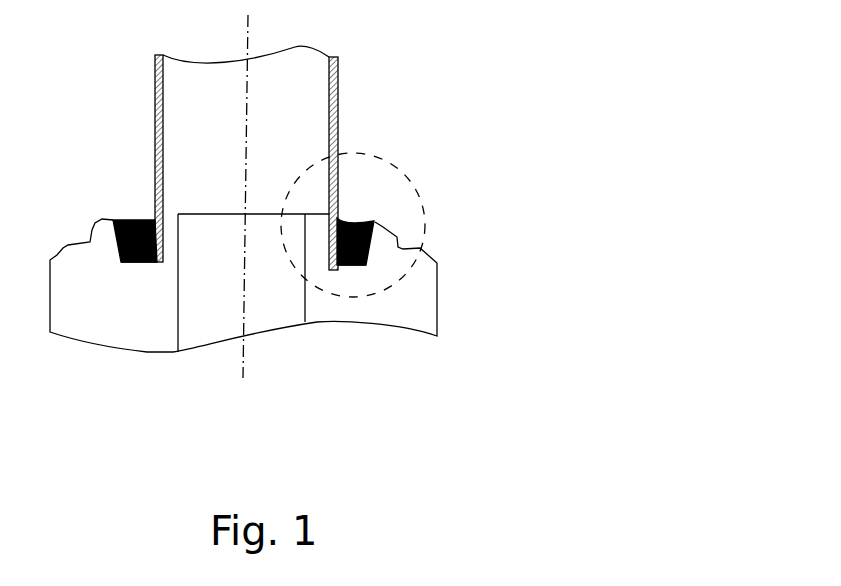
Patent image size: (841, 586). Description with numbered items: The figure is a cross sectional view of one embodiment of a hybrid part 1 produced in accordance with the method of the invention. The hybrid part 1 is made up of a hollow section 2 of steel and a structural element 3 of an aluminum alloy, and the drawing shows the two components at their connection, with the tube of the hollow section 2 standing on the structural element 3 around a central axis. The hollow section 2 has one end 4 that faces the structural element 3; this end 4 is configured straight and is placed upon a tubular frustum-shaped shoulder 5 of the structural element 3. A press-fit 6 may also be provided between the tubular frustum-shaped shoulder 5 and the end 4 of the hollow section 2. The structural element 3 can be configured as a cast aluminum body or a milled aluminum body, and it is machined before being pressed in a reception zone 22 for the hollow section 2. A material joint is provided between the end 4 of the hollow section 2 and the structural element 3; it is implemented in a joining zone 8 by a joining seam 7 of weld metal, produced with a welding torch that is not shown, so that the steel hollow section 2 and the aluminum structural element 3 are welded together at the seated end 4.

The hybrid part 1 is at (453, 68).
The hollow section 2 is at (337, 98).
The structural element 3 is at (422, 310).
The end 4 is at (328, 257).
The tubular frustum-shaped shoulder 5 is at (318, 240).
The press-fit 6 is at (163, 243).
The joining seam 7 is at (120, 217).
The joining zone 8 is at (412, 185).
The reception zone 22 is at (361, 215).